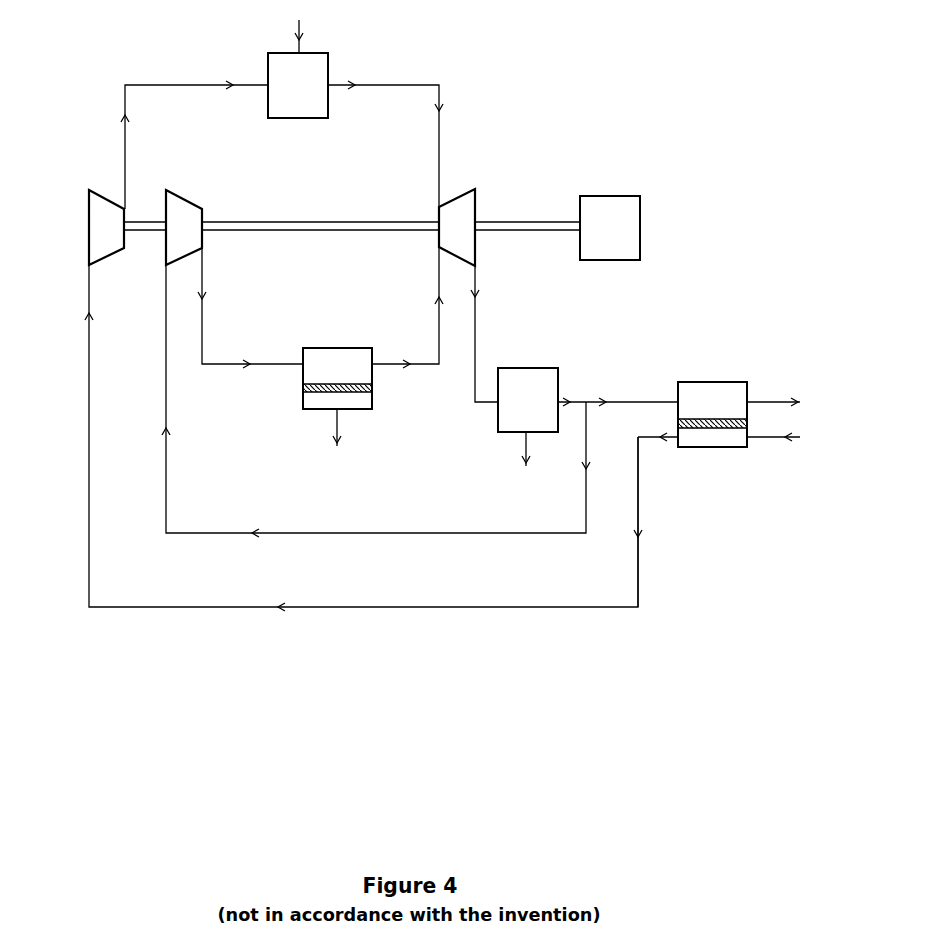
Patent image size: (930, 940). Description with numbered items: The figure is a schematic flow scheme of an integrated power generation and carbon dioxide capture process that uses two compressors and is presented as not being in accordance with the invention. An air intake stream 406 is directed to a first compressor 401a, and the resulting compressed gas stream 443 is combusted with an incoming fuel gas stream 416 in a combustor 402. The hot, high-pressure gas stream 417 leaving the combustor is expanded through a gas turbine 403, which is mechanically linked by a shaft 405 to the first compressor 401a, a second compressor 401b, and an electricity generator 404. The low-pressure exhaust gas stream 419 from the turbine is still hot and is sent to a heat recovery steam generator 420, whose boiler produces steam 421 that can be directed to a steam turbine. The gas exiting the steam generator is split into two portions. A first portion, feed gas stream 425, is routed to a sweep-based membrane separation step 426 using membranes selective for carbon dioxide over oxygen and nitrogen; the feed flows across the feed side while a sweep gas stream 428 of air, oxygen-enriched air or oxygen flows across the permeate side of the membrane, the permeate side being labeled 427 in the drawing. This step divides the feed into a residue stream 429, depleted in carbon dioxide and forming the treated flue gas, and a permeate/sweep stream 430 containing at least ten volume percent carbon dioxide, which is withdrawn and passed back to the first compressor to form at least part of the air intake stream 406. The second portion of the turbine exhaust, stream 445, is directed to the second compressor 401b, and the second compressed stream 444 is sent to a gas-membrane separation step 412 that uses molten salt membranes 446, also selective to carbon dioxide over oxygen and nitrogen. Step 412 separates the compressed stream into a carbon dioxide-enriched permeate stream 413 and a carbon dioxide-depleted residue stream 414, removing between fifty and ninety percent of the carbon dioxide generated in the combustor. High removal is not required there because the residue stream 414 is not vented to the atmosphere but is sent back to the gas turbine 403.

The first compressor 401a is at (88, 193).
The second compressor 401b is at (166, 193).
The combustor 402 is at (302, 120).
The gas turbine 403 is at (455, 197).
The electricity generator 404 is at (616, 196).
The shaft 405 is at (530, 221).
The air intake stream 406 is at (345, 438).
The gas-membrane separation step 412 is at (339, 347).
The carbon dioxide-enriched permeate stream 413 is at (336, 439).
The carbon dioxide-depleted residue stream 414 is at (407, 307).
The fuel gas stream 416 is at (300, 29).
The hot, high-pressure gas stream 417 is at (385, 144).
The low-pressure exhaust gas stream 419 is at (491, 334).
The heat recovery steam generator 420 is at (533, 368).
The steam 421 is at (526, 461).
The feed gas stream 425 is at (618, 394).
The sweep-based membrane separation step 426 is at (716, 382).
The permeate line 427 is at (678, 424).
The sweep gas stream 428 is at (789, 438).
The residue stream 429 is at (789, 403).
The permeate/sweep stream 430 is at (654, 522).
The compressed gas stream 443 is at (180, 145).
The second compressed stream 444 is at (250, 308).
The second portion of turbine exhaust 445 is at (376, 401).
The molten salt membranes 446 is at (373, 387).